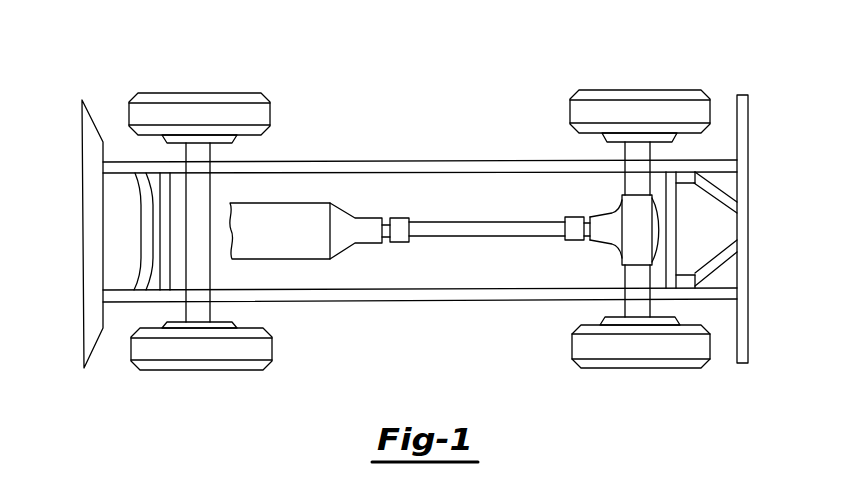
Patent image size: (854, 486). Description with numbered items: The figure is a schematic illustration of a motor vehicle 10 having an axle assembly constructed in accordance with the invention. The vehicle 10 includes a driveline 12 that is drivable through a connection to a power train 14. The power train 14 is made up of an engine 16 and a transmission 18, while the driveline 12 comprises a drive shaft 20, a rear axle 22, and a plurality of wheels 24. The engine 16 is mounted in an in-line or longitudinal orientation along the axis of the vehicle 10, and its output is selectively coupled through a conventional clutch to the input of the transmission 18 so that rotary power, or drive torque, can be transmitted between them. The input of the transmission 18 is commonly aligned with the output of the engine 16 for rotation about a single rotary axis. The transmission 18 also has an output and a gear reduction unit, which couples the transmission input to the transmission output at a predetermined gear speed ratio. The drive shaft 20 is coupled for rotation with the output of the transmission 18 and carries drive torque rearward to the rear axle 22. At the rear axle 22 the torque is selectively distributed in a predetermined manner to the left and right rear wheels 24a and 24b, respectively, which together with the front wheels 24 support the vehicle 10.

The vehicle 10 is at (373, 103).
The driveline 12 is at (582, 200).
The power train 14 is at (294, 268).
The engine 16 is at (273, 241).
The transmission 18 is at (340, 222).
The drive shaft 20 is at (463, 228).
The rear axle 22 is at (606, 258).
The wheels 24 is at (180, 107).
The left rear wheel 24a is at (582, 343).
The right rear wheel 24b is at (635, 105).